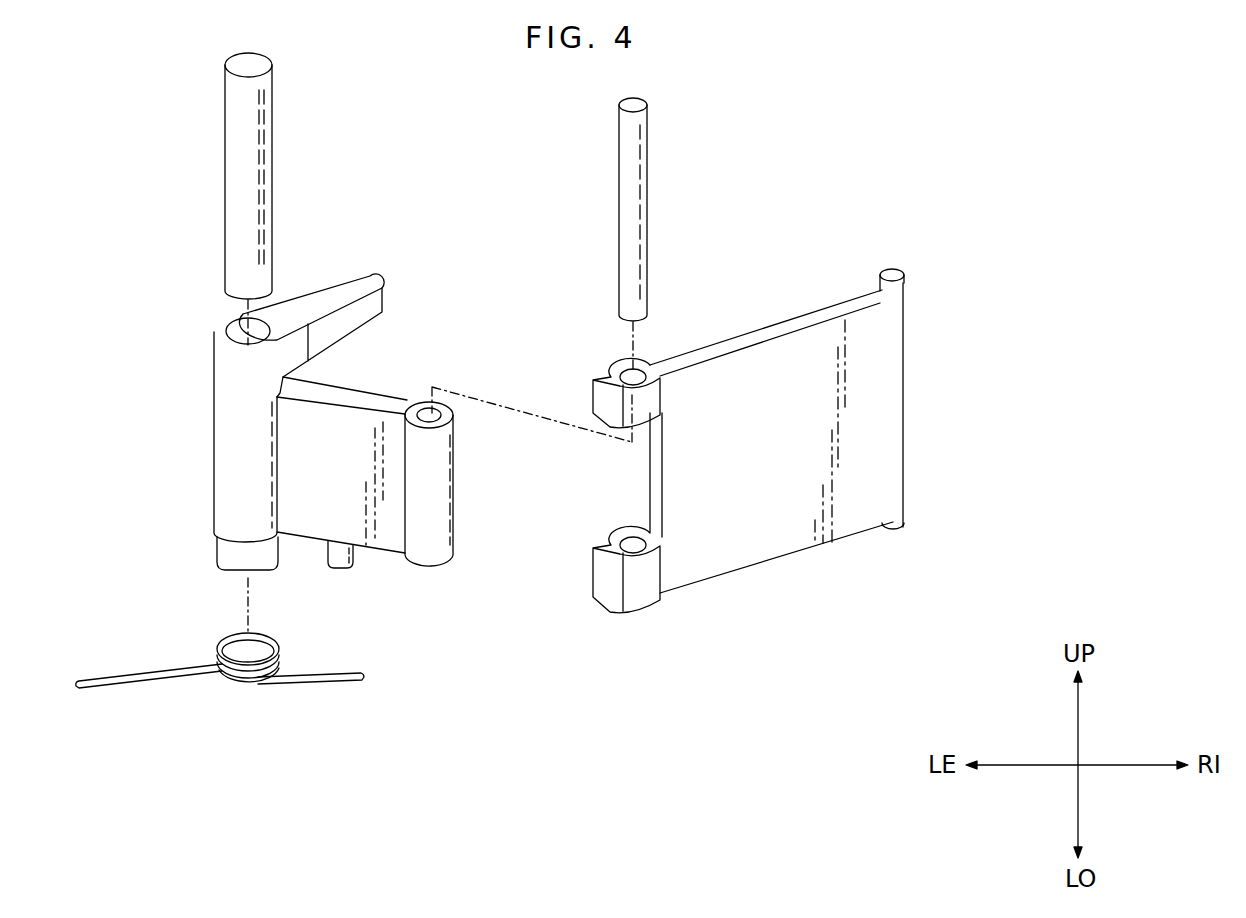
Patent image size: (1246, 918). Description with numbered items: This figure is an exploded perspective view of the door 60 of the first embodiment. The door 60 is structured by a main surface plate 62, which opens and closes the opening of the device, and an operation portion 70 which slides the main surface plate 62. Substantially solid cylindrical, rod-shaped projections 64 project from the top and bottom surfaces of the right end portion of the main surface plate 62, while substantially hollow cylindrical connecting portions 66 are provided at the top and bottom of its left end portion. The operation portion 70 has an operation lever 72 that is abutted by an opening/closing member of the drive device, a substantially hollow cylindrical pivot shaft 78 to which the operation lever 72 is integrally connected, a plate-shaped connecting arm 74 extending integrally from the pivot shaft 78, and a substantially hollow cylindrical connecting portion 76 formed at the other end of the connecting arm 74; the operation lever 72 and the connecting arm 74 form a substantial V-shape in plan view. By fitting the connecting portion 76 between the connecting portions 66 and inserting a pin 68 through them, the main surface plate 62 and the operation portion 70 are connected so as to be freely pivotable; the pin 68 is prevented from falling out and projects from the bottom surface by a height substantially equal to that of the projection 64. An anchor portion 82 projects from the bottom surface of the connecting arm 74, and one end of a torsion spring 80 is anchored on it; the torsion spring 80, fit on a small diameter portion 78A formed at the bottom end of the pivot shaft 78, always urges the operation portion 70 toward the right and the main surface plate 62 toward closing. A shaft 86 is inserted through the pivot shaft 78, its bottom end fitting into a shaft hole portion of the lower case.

The door 60 is at (856, 214).
The main surface plate 62 is at (876, 431).
The projections 64 is at (890, 271).
The connecting portions 66 is at (603, 384).
The pin 68 is at (648, 224).
The operation portion 70 is at (213, 423).
The operation lever 72 is at (381, 288).
The connecting arm 74 is at (353, 420).
The connecting portion 76 is at (448, 518).
The pivot shaft 78 is at (233, 493).
The small diameter portion 78A is at (238, 553).
The torsion spring 80 is at (260, 693).
The anchor portion 82 is at (347, 558).
The shaft 86 is at (272, 193).